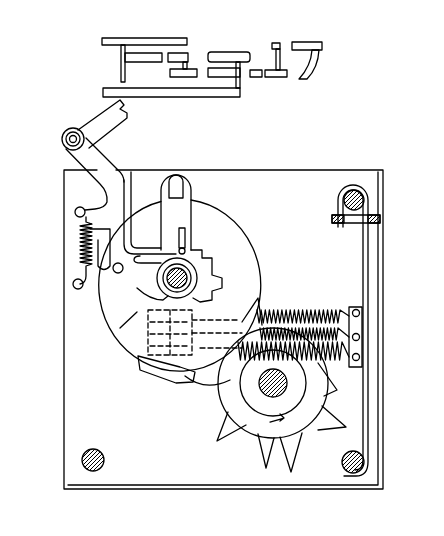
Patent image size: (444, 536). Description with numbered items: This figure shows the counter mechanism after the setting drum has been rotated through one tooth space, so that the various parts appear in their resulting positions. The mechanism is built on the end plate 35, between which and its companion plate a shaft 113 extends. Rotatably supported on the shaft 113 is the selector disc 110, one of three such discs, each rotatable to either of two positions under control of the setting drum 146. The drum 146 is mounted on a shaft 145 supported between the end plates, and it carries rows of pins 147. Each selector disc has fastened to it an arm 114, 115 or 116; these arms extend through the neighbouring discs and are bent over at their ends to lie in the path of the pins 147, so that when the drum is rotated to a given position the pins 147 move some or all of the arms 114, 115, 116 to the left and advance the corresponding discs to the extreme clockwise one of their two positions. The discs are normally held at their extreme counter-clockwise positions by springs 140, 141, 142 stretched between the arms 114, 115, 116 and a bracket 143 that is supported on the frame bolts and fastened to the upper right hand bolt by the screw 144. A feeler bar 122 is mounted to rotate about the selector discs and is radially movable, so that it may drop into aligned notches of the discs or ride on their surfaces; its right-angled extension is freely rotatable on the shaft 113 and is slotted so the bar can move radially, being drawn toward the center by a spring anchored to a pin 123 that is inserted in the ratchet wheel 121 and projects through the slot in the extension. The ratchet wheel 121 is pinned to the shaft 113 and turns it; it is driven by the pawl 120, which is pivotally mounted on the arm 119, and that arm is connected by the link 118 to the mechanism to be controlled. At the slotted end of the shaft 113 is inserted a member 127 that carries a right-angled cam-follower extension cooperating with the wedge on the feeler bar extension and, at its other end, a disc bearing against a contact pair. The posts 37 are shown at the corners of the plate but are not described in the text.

The end plate 35 is at (278, 173).
The mounting post 37 is at (352, 186).
The selector disc 110 is at (103, 317).
The shaft 113 is at (2, 278).
The arm 114 is at (147, 369).
The arm 115 is at (200, 369).
The arm 116 is at (130, 332).
The link 118 is at (90, 122).
The arm 119 is at (106, 162).
The pawl 120 is at (110, 240).
The ratchet wheel 121 is at (214, 278).
The feeler bar 122 is at (207, 173).
The pin 123 is at (188, 256).
The member 127 is at (158, 309).
The spring 140 is at (296, 310).
The spring 141 is at (316, 320).
The spring 142 is at (320, 386).
The bracket 143 is at (362, 244).
The screw 144 is at (338, 216).
The shaft 145 is at (268, 397).
The setting drum 146 is at (242, 437).
The pins 147 is at (225, 420).